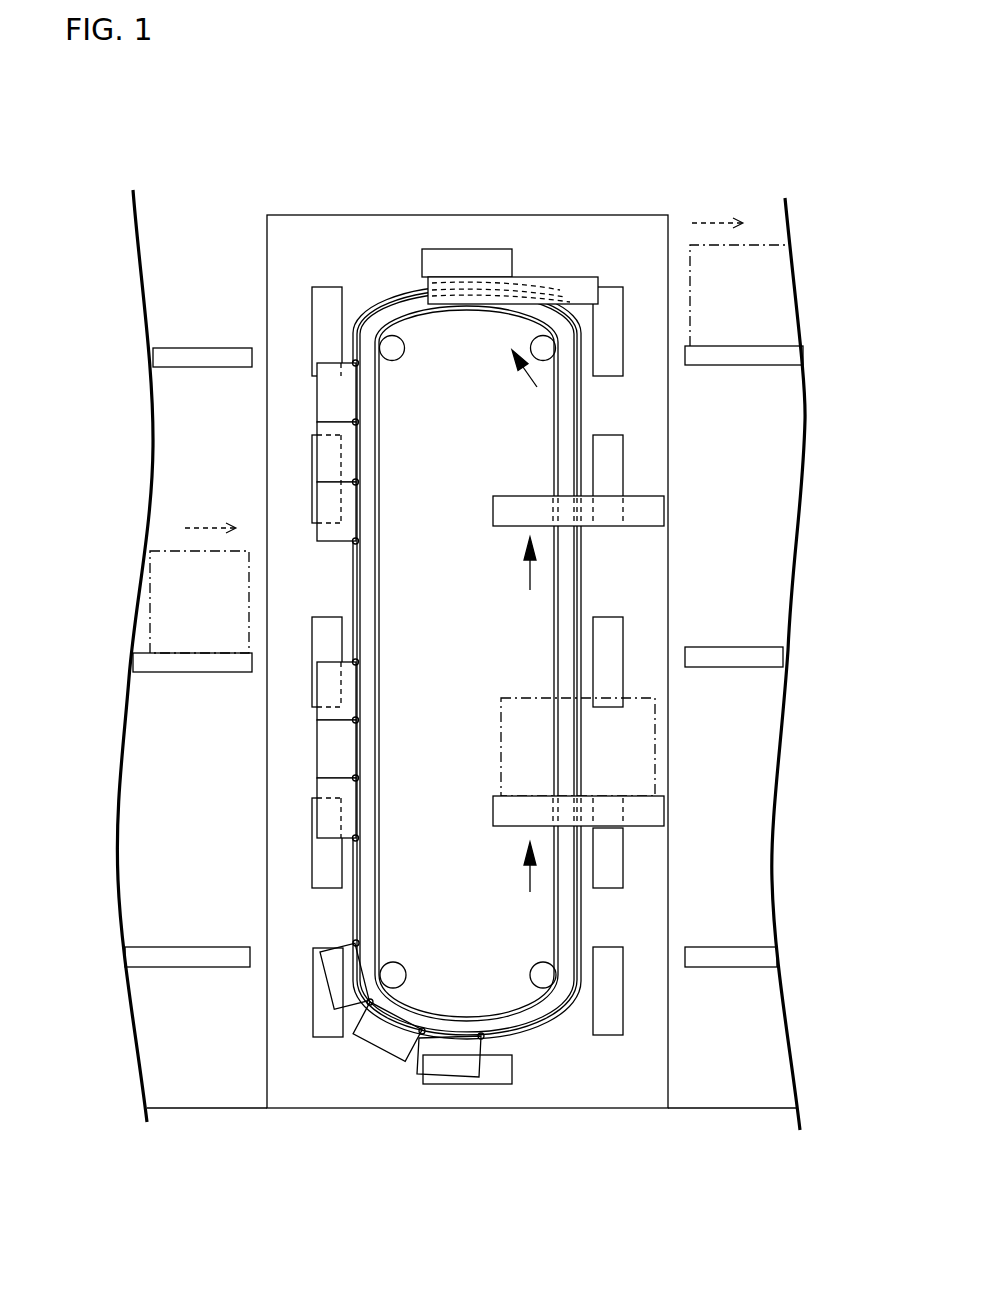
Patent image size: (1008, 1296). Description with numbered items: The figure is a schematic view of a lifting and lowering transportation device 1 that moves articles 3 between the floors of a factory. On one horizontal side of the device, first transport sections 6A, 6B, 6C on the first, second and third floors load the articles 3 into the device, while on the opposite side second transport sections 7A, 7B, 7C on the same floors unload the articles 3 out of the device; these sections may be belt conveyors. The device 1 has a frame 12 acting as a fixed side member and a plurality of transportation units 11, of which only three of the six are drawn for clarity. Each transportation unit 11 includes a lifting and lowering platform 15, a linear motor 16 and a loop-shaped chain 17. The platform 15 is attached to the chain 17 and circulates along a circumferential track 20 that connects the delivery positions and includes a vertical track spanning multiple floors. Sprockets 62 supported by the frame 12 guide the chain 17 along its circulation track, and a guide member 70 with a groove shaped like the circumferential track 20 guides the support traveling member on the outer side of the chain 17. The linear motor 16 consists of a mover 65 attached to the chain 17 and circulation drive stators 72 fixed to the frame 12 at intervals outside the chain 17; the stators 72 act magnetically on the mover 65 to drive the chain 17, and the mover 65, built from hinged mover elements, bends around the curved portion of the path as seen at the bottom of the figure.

The lifting and lowering transportation device 1 is at (432, 162).
The article 3 is at (160, 549).
The first transport section 6A is at (132, 955).
The first transport section 6B is at (135, 660).
The first transport section 6C is at (152, 358).
The second transport section 7A is at (765, 955).
The second transport section 7B is at (775, 657).
The second transport section 7C is at (788, 353).
The transportation unit 11 is at (569, 251).
The frame 12 is at (365, 215).
The lifting and lowering platform 15 is at (540, 283).
The linear motor 16 is at (277, 414).
The chain 17 is at (403, 315).
The circumferential track 20 is at (548, 1033).
The sprocket 62 is at (528, 350).
The mover 65 is at (312, 418).
The guide member 70 is at (412, 289).
The circulation drive stator 72 is at (478, 262).